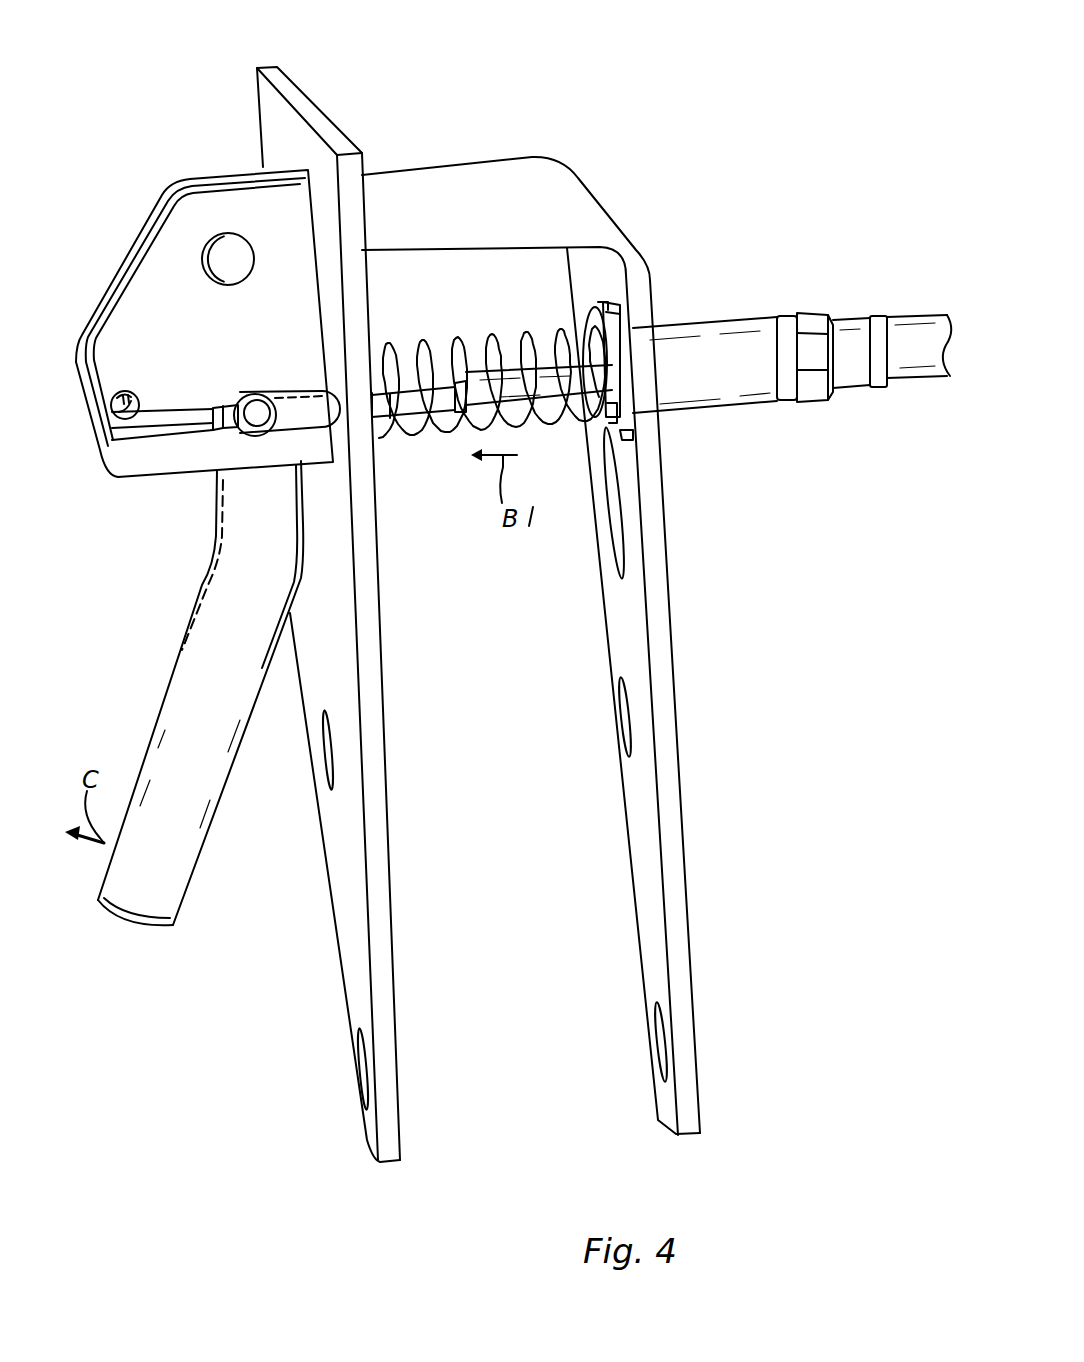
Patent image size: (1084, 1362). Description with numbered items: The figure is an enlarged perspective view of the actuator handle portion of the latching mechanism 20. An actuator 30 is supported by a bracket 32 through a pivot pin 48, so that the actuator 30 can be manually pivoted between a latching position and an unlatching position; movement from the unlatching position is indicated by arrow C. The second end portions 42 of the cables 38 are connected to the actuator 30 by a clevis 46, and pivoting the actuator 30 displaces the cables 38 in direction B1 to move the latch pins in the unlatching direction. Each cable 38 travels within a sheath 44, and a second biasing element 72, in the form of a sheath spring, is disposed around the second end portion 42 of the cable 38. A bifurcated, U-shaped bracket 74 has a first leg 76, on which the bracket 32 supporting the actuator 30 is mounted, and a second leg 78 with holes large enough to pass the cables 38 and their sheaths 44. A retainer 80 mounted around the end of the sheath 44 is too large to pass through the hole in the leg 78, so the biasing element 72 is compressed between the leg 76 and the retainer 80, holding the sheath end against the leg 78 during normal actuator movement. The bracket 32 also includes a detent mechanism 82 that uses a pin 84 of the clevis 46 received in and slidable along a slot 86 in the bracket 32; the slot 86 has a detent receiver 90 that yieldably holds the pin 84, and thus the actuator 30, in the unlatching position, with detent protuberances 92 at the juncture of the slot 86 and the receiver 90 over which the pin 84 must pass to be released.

The latching mechanism 20 is at (519, 608).
The actuator 30 is at (190, 888).
The bracket 32 is at (204, 296).
The cable 38 is at (493, 426).
The second end portion 42 is at (412, 445).
The sheath 44 is at (900, 317).
The clevis 46 is at (287, 425).
The pivot pin 48 is at (222, 233).
The second biasing element 72 is at (560, 322).
The bracket 74 is at (363, 1145).
The first leg 76 is at (318, 638).
The second leg 78 is at (695, 1020).
The retainer 80 is at (622, 310).
The detent mechanism 82 is at (117, 441).
The pin 84 is at (247, 437).
The slot 86 is at (156, 441).
The detent receiver 90 is at (117, 468).
The detent protuberance 92 is at (124, 413).